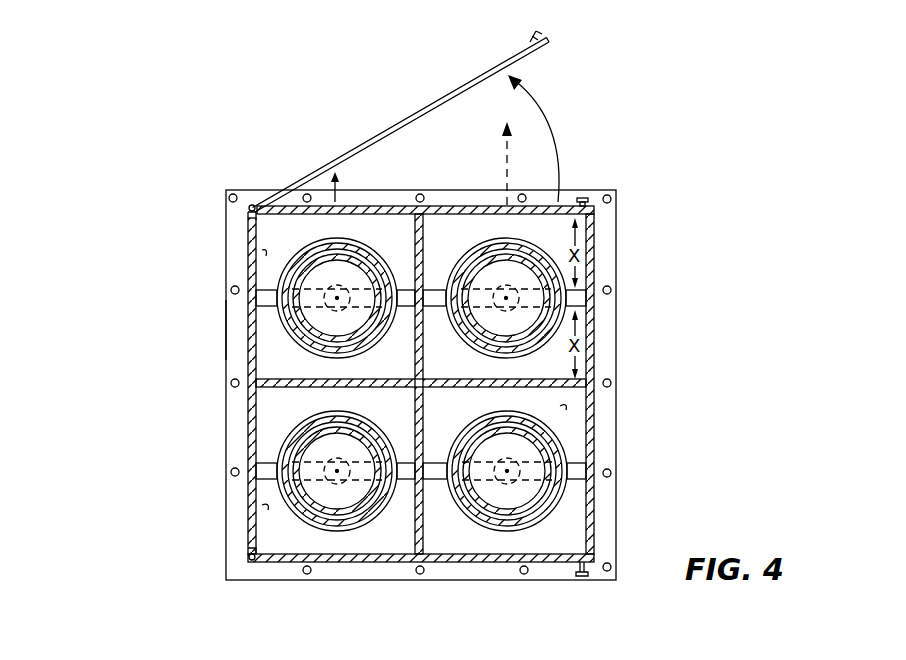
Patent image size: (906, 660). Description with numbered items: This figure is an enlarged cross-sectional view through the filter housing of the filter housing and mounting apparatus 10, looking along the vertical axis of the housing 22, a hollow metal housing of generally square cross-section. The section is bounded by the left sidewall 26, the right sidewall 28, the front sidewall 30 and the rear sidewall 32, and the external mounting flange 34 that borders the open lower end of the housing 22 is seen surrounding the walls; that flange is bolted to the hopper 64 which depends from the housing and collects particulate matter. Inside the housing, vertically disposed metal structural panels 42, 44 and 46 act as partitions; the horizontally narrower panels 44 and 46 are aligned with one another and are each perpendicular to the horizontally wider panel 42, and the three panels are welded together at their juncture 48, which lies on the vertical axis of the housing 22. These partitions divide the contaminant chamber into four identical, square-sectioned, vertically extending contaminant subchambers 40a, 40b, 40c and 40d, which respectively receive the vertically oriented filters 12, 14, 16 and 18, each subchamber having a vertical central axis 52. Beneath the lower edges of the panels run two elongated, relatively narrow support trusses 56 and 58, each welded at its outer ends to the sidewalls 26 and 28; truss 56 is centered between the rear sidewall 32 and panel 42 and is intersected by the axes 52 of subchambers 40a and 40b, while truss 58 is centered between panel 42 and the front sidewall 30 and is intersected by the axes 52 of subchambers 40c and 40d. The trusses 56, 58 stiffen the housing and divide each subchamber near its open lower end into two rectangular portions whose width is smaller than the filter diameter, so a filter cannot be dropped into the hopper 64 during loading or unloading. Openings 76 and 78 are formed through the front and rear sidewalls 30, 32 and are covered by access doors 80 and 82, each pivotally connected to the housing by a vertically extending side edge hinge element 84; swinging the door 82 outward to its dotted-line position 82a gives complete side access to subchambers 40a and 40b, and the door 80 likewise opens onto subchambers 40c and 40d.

The filter housing and mounting apparatus 10 is at (148, 388).
The filter 12 is at (376, 248).
The filter 14 is at (462, 238).
The filter 16 is at (290, 406).
The filter 18 is at (462, 408).
The housing 22 is at (238, 419).
The left sidewall 26 is at (248, 360).
The right sidewall 28 is at (594, 352).
The front sidewall 30 is at (310, 553).
The rear sidewall 32 is at (306, 216).
The external mounting flange 34 is at (226, 330).
The contaminant subchamber 40a is at (262, 252).
The contaminant subchamber 40b is at (582, 198).
The contaminant subchamber 40c is at (262, 506).
The contaminant subchamber 40d is at (566, 412).
The structural panel 42 is at (522, 379).
The structural panel 44 is at (416, 272).
The structural panel 46 is at (415, 420).
The juncture 48 is at (408, 379).
The vertical central axis 52 is at (337, 298).
The support truss 56 is at (262, 283).
The support truss 58 is at (262, 458).
The hopper 64 is at (580, 538).
The opening 76 is at (256, 545).
The opening 78 is at (256, 226).
The access door 80 is at (578, 574).
The access door 82 is at (486, 206).
The dotted line position of access door 82a is at (404, 106).
The side edge hinge element 84 is at (252, 204).